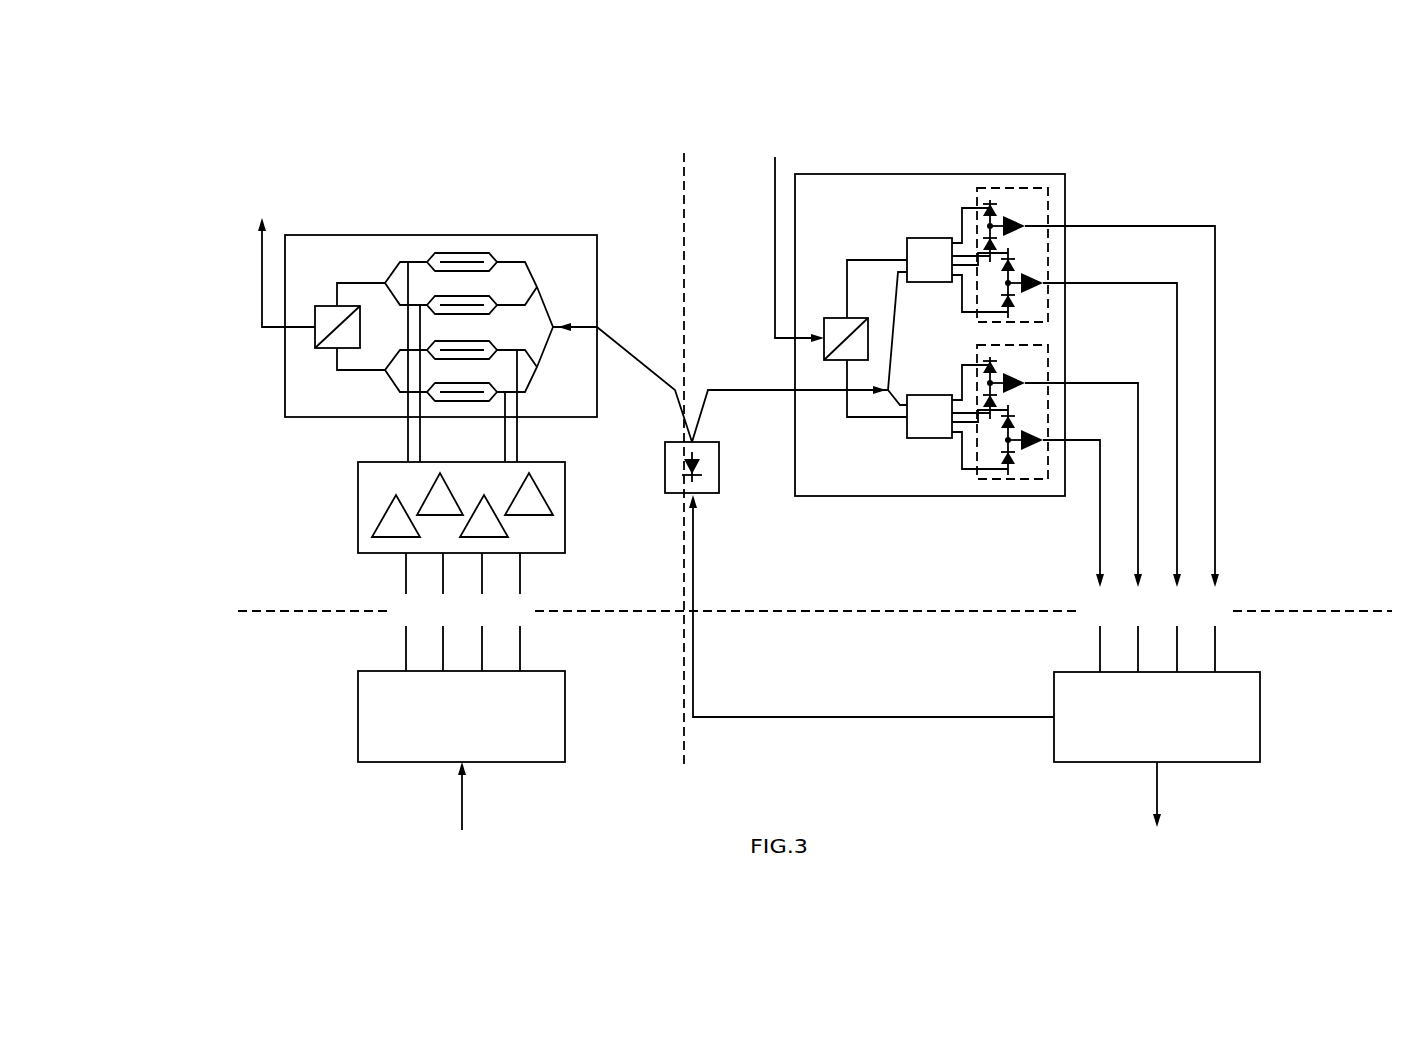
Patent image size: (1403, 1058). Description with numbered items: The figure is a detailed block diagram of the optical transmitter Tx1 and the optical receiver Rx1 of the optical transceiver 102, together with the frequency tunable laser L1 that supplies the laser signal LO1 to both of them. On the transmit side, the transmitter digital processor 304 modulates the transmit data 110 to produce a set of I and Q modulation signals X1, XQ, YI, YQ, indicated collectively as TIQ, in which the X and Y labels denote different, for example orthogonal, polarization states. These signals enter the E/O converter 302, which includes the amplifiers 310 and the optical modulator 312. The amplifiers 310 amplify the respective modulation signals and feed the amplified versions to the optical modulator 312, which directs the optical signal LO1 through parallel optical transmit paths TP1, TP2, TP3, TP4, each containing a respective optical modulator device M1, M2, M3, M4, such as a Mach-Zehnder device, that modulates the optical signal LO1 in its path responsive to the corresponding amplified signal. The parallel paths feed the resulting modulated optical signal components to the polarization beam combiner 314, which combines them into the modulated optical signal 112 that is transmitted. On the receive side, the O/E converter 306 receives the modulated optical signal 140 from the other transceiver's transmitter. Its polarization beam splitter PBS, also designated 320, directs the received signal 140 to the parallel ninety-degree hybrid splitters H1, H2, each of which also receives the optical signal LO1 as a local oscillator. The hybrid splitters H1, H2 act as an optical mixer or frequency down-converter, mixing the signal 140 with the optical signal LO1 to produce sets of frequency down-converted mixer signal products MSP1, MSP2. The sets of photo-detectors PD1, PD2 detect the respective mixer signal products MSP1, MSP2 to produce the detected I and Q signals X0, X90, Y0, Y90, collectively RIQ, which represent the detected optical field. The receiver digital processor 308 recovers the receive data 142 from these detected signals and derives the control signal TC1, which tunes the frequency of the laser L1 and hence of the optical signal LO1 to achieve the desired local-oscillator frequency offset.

The optical transceiver 102 is at (522, 93).
The optical transmitter Tx1 is at (522, 188).
The optical receiver Rx1 is at (1040, 93).
The electrical/optical (E/O) converter 302 is at (306, 447).
The transmitter digital processor 304 is at (358, 715).
The optical/electrical (O/E) converter 306 is at (1066, 192).
The receiver digital processor 308 is at (1260, 715).
The amplifiers 310 is at (565, 515).
The optical modulator 312 is at (285, 388).
The polarization beam combiner 314 is at (323, 306).
The polarization beam splitter 320 is at (868, 324).
The transmit data 110 is at (462, 810).
The modulated optical signal 112 is at (262, 277).
The modulated optical signal 140 is at (792, 150).
The receive data 142 is at (1157, 800).
The optical modulator device M1 is at (465, 252).
The optical modulator device M2 is at (465, 314).
The optical modulator device M3 is at (463, 359).
The optical modulator device M4 is at (465, 401).
The optical transmit path TP1 is at (533, 267).
The optical transmit path TP2 is at (513, 300).
The optical transmit path TP3 is at (515, 337).
The optical transmit path TP4 is at (533, 387).
The laser signal LO1 is at (643, 367).
The frequency tunable laser L1 is at (719, 468).
The I and Q modulation signals TIQ is at (381, 625).
The I modulation signal X1 is at (407, 612).
The Q modulation signal XQ is at (444, 612).
The I modulation signal YI is at (482, 612).
The Q modulation signal YQ is at (520, 612).
The polarization beam splitter PBS is at (839, 324).
The 90° hybrid splitter H1 is at (932, 238).
The 90° hybrid splitter H2 is at (930, 438).
The frequency down-converted mixer signal products MSP1 is at (961, 196).
The frequency down-converted mixer signal products MSP2 is at (963, 478).
The photo-detectors PD1 is at (1048, 256).
The photo-detectors PD2 is at (1048, 421).
The detected I signal X0 is at (1077, 556).
The detected Q signal X90 is at (1090, 527).
The detected I signal Y0 is at (1116, 477).
The detected Q signal Y90 is at (1128, 449).
The detected I and Q signals RIQ is at (1246, 624).
The control signal TC1 is at (885, 717).